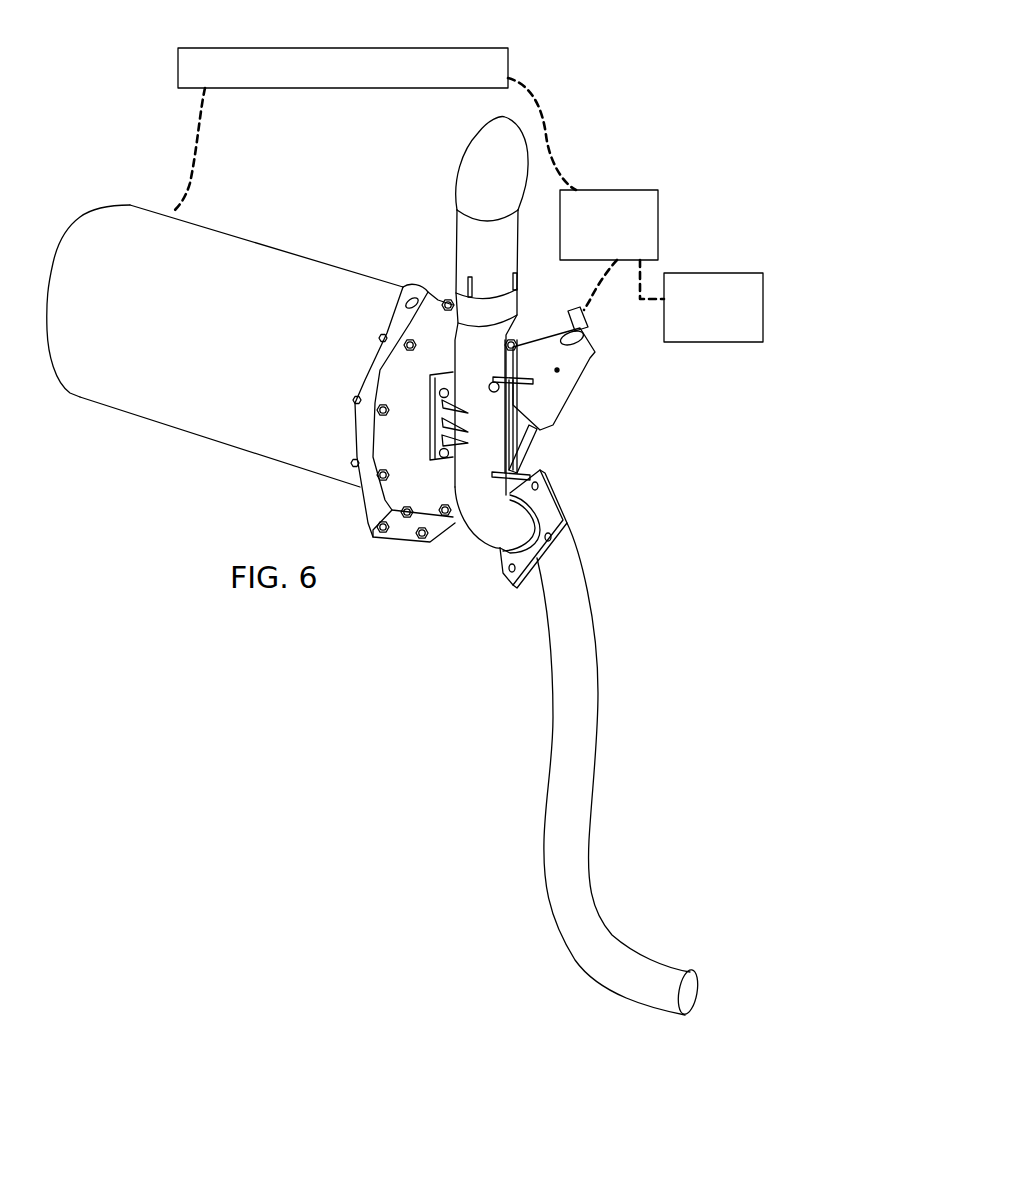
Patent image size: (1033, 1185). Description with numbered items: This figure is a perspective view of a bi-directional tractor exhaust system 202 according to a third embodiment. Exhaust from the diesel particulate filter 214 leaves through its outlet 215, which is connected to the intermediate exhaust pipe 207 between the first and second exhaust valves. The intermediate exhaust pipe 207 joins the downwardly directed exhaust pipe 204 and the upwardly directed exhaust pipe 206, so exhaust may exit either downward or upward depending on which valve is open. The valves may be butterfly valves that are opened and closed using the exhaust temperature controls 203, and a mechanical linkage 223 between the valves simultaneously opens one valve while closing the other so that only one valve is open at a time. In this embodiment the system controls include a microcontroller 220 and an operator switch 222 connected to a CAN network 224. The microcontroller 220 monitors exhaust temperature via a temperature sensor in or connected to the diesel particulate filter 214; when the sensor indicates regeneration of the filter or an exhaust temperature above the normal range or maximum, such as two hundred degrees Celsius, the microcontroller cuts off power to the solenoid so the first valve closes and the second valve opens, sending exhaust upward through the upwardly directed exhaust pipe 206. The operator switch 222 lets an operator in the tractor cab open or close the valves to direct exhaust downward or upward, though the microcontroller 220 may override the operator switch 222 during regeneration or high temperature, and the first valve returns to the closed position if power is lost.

The bi-directional tractor exhaust system 202 is at (594, 138).
The exhaust temperature controls 203 is at (632, 398).
The downwardly directed exhaust pipe 204 is at (570, 807).
The upwardly directed exhaust pipe 206 is at (487, 242).
The intermediate exhaust pipe 207 is at (495, 437).
The diesel particulate filter 214 is at (210, 278).
The outlet 215 is at (443, 410).
The microcontroller 220 is at (658, 198).
The operator switch 222 is at (687, 273).
The mechanical linkage 223 is at (508, 398).
The CAN network 224 is at (270, 47).